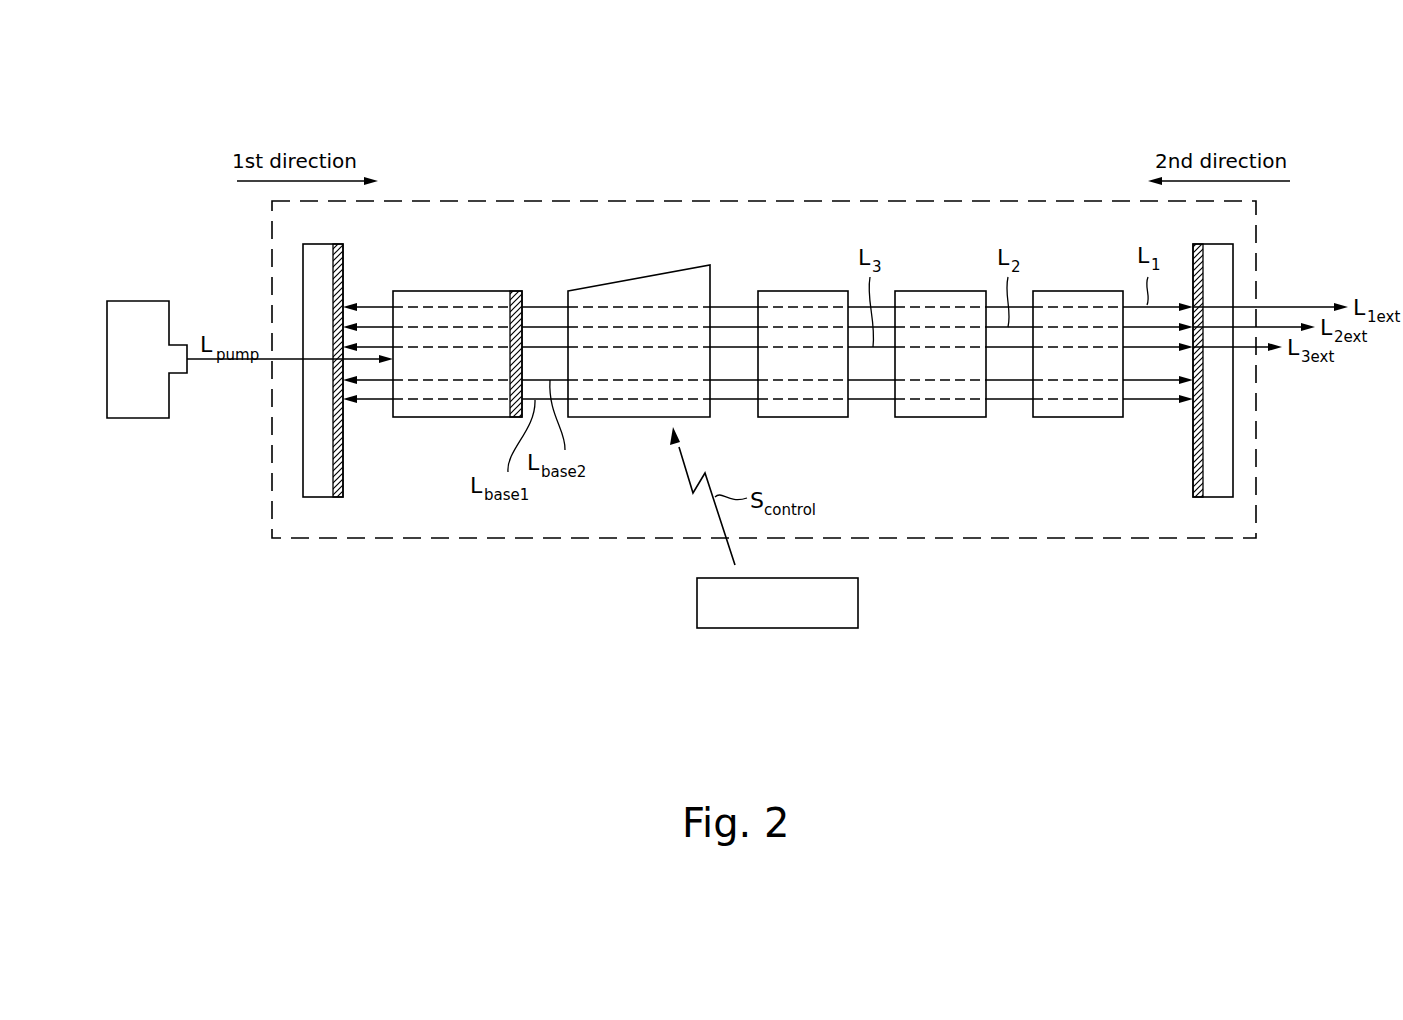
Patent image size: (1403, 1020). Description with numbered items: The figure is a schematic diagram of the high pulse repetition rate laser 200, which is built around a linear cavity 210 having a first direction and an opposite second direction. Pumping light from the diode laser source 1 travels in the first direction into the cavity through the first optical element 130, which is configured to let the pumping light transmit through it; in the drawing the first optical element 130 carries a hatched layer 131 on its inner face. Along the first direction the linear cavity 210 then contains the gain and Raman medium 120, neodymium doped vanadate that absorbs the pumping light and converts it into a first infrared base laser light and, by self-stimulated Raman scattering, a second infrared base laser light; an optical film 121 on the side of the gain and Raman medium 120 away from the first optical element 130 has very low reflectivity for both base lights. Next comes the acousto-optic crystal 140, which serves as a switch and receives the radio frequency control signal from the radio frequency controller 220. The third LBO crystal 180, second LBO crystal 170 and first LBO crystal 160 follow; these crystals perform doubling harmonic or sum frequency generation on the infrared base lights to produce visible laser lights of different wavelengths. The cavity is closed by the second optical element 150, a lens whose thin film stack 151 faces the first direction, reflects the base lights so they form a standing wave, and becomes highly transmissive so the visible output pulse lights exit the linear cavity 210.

The diode laser source 1 is at (142, 300).
The gain and Raman medium 120 is at (431, 290).
The optical film 121 is at (516, 290).
The first optical element 130 is at (317, 497).
The reflective coating of first mirror 131 is at (338, 497).
The acousto-optic crystal 140 is at (638, 278).
The second optical element 150 is at (1218, 497).
The thin film stack 151 is at (1198, 497).
The first LBO crystal 160 is at (1080, 290).
The second LBO crystal 170 is at (944, 290).
The third LBO crystal 180 is at (805, 290).
The high pulse repetition rate laser 200 is at (145, 98).
The linear cavity 210 is at (766, 200).
The radio frequency controller 220 is at (858, 600).